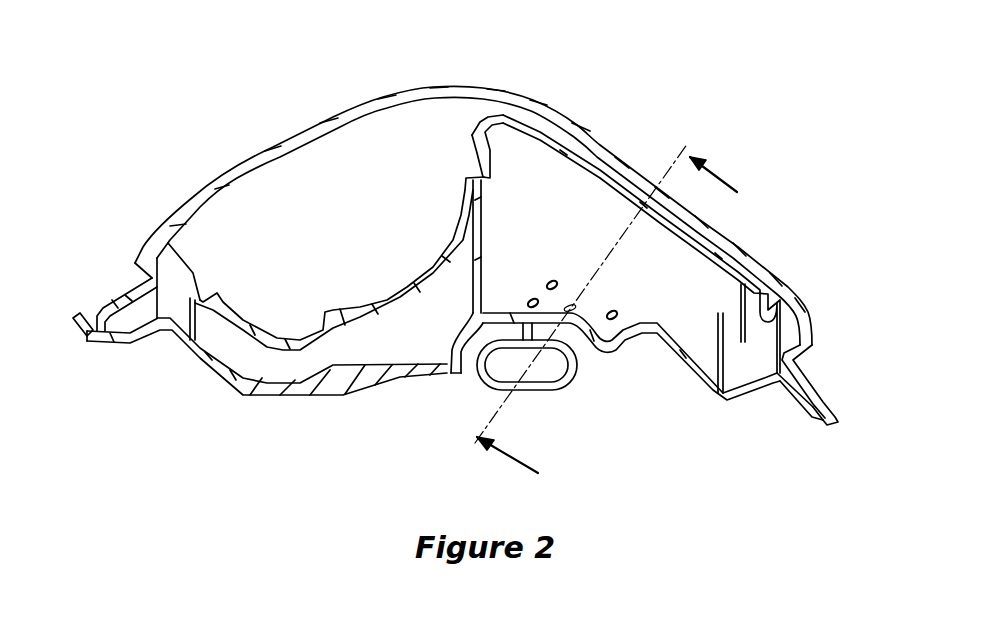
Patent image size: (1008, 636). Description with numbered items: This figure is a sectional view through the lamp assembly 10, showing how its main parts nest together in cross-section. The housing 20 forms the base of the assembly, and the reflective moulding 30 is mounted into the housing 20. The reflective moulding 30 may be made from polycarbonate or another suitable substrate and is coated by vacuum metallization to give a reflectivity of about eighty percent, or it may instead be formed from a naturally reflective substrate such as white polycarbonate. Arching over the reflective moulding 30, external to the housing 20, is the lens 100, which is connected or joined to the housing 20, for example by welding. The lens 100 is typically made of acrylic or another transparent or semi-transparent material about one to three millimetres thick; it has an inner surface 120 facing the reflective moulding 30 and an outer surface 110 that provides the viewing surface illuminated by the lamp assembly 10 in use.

The lamp assembly 10 is at (617, 101).
The housing 20 is at (258, 396).
The reflective moulding 30 is at (742, 246).
The lens 100 is at (241, 164).
The outer surface 110 is at (381, 95).
The inner surface 120 is at (348, 120).